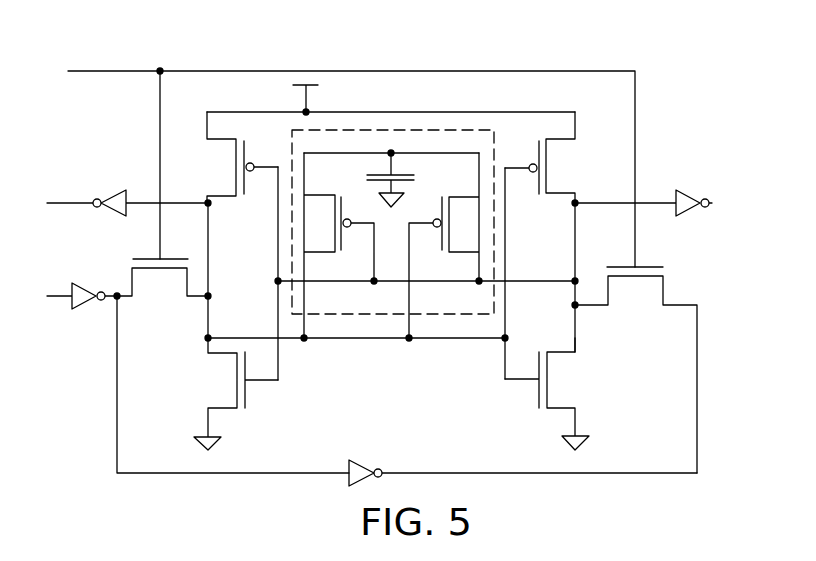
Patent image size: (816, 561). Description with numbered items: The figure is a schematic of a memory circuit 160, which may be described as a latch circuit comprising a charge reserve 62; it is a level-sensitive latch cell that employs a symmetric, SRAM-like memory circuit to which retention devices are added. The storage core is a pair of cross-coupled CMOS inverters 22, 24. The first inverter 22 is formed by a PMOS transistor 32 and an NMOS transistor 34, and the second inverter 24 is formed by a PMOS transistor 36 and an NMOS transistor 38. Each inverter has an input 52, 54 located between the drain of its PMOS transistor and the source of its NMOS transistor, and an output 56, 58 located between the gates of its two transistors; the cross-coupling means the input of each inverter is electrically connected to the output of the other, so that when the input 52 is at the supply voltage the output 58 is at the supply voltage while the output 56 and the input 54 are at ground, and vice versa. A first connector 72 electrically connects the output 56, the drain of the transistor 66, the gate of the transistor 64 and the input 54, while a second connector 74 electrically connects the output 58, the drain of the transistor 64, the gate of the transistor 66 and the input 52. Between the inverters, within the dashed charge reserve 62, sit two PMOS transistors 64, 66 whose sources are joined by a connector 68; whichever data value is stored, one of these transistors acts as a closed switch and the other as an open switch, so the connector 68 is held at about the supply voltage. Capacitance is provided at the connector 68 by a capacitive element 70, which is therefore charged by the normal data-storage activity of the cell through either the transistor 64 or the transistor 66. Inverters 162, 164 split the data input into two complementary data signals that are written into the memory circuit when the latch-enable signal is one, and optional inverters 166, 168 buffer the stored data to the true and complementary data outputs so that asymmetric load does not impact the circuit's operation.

The memory circuit 160 is at (531, 50).
The charge reserve 62 is at (393, 187).
The connector 68 is at (362, 152).
The capacitive element 70 is at (402, 173).
The transistor 64 is at (328, 230).
The transistor 66 is at (475, 232).
The inverter 22 is at (256, 281).
The inverter 24 is at (533, 281).
The transistor 32 is at (229, 177).
The transistor 34 is at (229, 385).
The transistor 36 is at (580, 175).
The transistor 38 is at (527, 397).
The input 52 is at (209, 212).
The input 54 is at (574, 255).
The output 56 is at (277, 255).
The output 58 is at (506, 212).
The first connector 72 is at (438, 282).
The second connector 74 is at (374, 339).
The inverter 162 is at (85, 304).
The inverter 164 is at (357, 460).
The inverter 166 is at (118, 189).
The inverter 168 is at (680, 188).